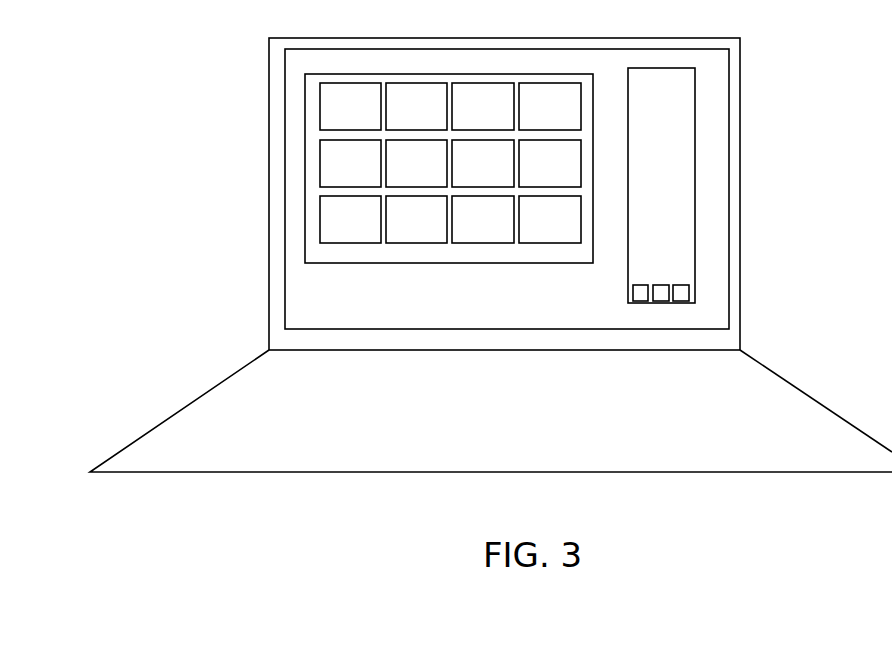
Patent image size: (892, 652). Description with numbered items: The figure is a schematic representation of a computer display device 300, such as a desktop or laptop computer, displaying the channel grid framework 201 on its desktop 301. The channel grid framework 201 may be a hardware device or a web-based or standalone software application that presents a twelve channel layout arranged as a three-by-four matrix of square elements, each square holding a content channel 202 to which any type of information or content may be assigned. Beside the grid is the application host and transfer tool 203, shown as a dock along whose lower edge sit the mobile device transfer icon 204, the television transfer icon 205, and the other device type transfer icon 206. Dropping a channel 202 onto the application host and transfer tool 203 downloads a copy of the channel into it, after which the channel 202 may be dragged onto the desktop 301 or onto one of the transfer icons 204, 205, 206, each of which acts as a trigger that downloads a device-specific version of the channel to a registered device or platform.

The computer display device 300 is at (232, 86).
The desktop 301 is at (610, 62).
The channel grid framework 201 is at (508, 74).
The content channel 202 is at (450, 163).
The application host and transfer tool 203 is at (695, 95).
The transfer icon #1 mobile device 204 is at (638, 285).
The transfer icon #2 television 205 is at (662, 285).
The transfer icon #3 other device type 206 is at (688, 285).